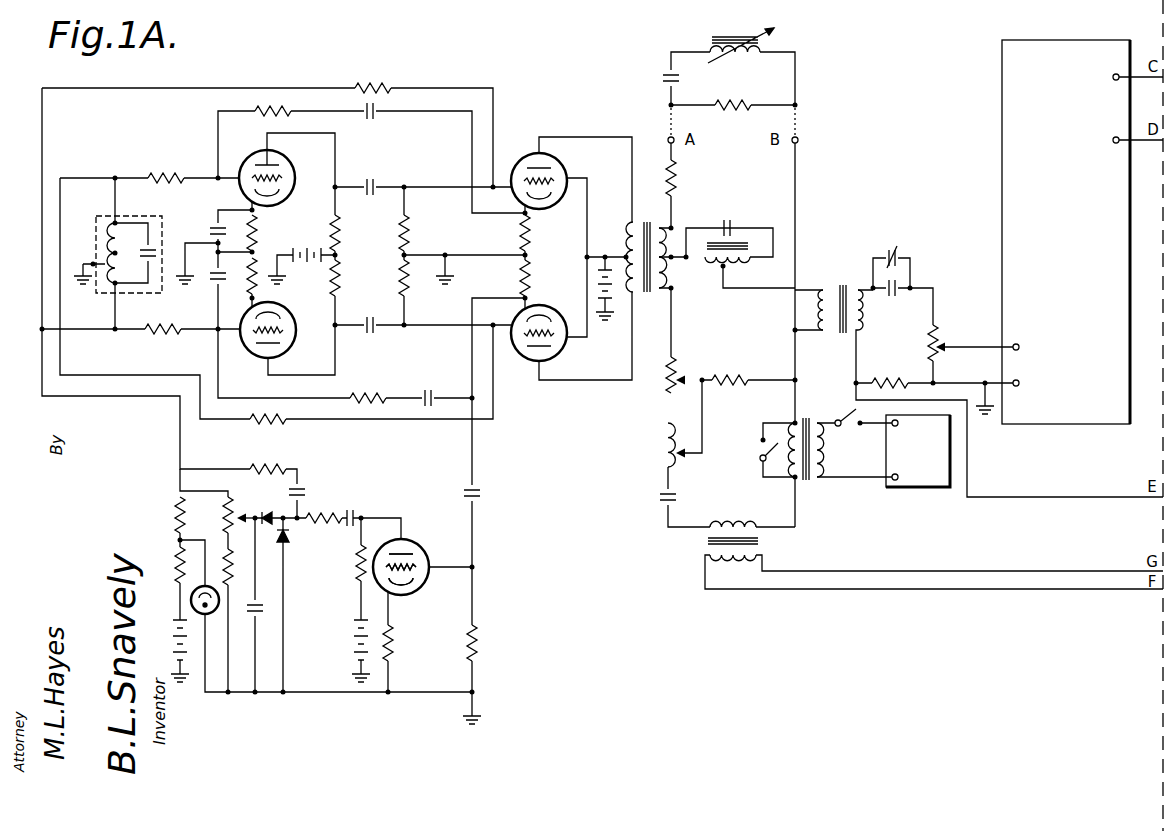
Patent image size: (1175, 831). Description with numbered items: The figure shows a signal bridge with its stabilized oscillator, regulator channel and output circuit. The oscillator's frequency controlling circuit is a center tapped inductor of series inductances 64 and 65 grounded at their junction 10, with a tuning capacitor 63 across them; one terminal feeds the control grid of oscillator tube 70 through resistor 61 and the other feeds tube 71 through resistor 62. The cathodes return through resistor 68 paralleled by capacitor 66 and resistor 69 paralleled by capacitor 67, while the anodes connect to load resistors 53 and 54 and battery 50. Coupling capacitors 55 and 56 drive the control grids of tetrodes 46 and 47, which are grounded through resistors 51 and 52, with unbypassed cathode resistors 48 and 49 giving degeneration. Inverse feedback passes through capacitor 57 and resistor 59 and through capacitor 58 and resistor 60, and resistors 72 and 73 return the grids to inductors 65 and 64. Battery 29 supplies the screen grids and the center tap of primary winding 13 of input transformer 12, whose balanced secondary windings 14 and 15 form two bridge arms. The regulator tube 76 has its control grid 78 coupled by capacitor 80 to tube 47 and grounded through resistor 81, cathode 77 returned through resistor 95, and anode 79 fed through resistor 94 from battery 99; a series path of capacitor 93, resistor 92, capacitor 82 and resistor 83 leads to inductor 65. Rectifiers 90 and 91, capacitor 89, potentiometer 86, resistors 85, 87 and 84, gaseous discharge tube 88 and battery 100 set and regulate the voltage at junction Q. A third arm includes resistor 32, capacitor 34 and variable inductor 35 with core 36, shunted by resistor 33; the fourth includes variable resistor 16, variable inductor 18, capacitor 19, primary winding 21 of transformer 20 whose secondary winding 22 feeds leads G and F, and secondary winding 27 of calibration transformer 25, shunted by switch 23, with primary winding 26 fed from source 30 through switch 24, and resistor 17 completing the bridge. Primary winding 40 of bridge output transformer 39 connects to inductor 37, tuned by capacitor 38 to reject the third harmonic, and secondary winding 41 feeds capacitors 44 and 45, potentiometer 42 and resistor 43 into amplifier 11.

The ground 10 is at (480, 721).
The amplifier 11 is at (1055, 248).
The input transformer 12 is at (647, 219).
The primary winding 13 is at (626, 232).
The secondary winding 14 is at (668, 236).
The secondary winding 15 is at (666, 280).
The variable resistor 16 is at (677, 370).
The resistor 17 is at (730, 378).
The variable inductor 18 is at (664, 447).
The capacitor 19 is at (677, 497).
The transformer 20 is at (704, 542).
The primary winding 21 is at (728, 520).
The secondary winding 22 is at (728, 560).
The switch 23 is at (758, 449).
The switch 24 is at (851, 417).
The calibration transformer 25 is at (806, 416).
The primary winding 26 is at (826, 456).
The secondary winding 27 is at (790, 456).
The battery 29 is at (618, 300).
The source of potential 30 is at (908, 456).
The resistor 32 is at (678, 184).
The resistor 33 is at (731, 110).
The capacitor 34 is at (680, 78).
The variable inductor 35 is at (750, 58).
The core 36 is at (715, 36).
The inductor 37 is at (746, 264).
The capacitor 38 is at (731, 222).
The bridge output transformer 39 is at (841, 286).
The primary winding 40 is at (810, 310).
The secondary winding 41 is at (864, 319).
The potentiometer 42 is at (929, 347).
The resistor 43 is at (886, 380).
The capacitor 44 is at (896, 297).
The variable capacitor 45 is at (888, 252).
The electron discharge tube 46 is at (568, 170).
The electron discharge tube 47 is at (553, 312).
The resistor 48 is at (520, 238).
The resistor 49 is at (520, 280).
The battery 50 is at (300, 248).
The resistor 51 is at (399, 228).
The resistor 52 is at (399, 282).
The load resistor 53 is at (340, 227).
The load resistor 54 is at (340, 282).
The coupling capacitor 55 is at (376, 182).
The coupling capacitor 56 is at (366, 321).
The capacitor 57 is at (375, 115).
The capacitor 58 is at (434, 396).
The resistor 59 is at (258, 114).
The resistor 60 is at (381, 397).
The resistor 61 is at (162, 175).
The resistor 62 is at (160, 333).
The tuning capacitor 63 is at (153, 246).
The inductance 64 is at (104, 234).
The inductance 65 is at (121, 267).
The capacitor 66 is at (212, 227).
The capacitor 67 is at (215, 284).
The resistor 68 is at (256, 232).
The resistor 69 is at (256, 266).
The oscillator tube 70 is at (290, 169).
The electron discharge tube 71 is at (290, 315).
The resistor 72 is at (391, 88).
The resistor 73 is at (286, 423).
The tube 76 is at (418, 545).
The cathode 77 is at (411, 585).
The control grid 78 is at (426, 575).
The anode 79 is at (416, 556).
The capacitor 80 is at (478, 495).
The resistor 81 is at (467, 638).
The capacitor 82 is at (303, 490).
The resistor 83 is at (286, 468).
The resistor 84 is at (176, 571).
The resistor 85 is at (176, 525).
The potentiometer 86 is at (225, 526).
The resistor 87 is at (232, 576).
The gaseous discharge tube 88 is at (208, 616).
The capacitor 89 is at (258, 617).
The rectifier 90 is at (267, 512).
The rectifier 91 is at (287, 541).
The resistor 92 is at (325, 526).
The capacitor 93 is at (352, 512).
The resistor 94 is at (356, 575).
The resistor 95 is at (393, 638).
The battery 99 is at (353, 630).
The battery 100 is at (177, 650).